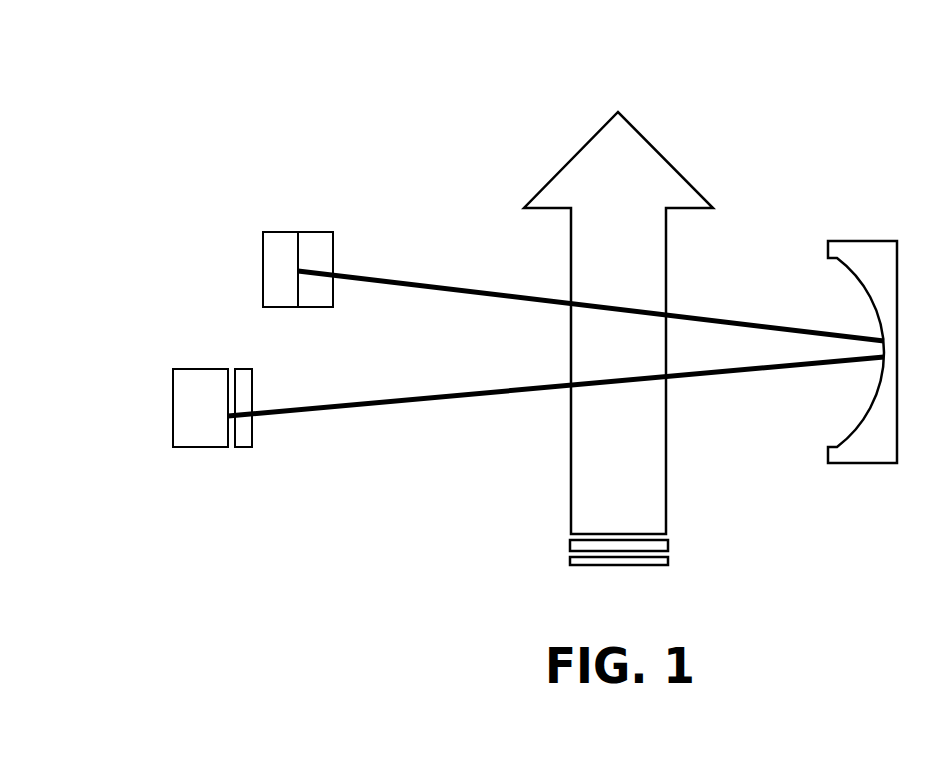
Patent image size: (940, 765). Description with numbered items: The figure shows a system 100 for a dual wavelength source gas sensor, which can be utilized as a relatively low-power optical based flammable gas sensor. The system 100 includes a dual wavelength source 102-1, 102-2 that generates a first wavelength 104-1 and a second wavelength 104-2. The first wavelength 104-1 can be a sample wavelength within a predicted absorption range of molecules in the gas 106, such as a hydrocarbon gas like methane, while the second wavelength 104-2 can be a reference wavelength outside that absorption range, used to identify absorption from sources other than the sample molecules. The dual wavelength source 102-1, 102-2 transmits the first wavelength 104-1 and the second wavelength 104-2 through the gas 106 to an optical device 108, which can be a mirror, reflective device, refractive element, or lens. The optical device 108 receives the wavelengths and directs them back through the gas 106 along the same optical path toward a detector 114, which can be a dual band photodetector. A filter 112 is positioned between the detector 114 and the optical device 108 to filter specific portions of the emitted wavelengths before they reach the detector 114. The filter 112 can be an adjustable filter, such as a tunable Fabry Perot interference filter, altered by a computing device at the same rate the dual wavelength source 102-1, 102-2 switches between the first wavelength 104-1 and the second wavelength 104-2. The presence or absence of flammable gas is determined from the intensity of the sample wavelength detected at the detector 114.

The system 100 is at (797, 118).
The dual wavelength source 102-1 is at (282, 232).
The dual wavelength source 102-2 is at (318, 232).
The first wavelength 104-1 is at (393, 281).
The second wavelength 104-2 is at (493, 291).
The gas 106 is at (667, 262).
The optical device 108 is at (868, 241).
The filter 112 is at (245, 369).
The detector 114 is at (202, 369).